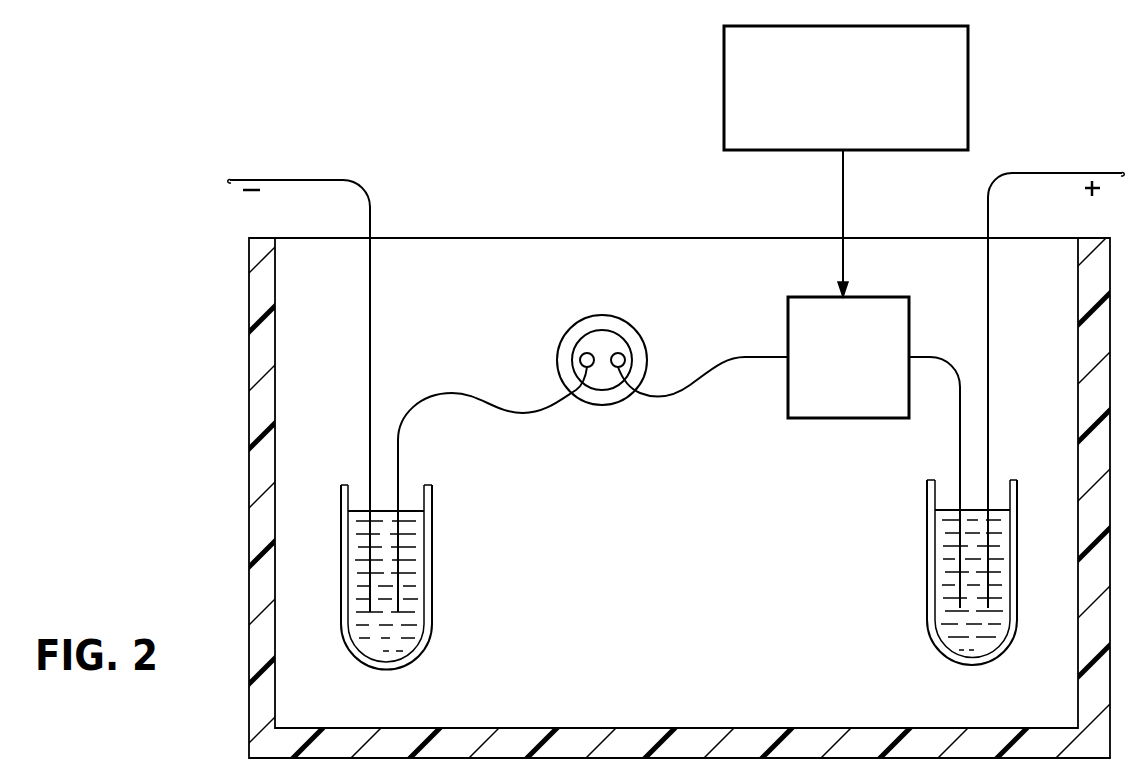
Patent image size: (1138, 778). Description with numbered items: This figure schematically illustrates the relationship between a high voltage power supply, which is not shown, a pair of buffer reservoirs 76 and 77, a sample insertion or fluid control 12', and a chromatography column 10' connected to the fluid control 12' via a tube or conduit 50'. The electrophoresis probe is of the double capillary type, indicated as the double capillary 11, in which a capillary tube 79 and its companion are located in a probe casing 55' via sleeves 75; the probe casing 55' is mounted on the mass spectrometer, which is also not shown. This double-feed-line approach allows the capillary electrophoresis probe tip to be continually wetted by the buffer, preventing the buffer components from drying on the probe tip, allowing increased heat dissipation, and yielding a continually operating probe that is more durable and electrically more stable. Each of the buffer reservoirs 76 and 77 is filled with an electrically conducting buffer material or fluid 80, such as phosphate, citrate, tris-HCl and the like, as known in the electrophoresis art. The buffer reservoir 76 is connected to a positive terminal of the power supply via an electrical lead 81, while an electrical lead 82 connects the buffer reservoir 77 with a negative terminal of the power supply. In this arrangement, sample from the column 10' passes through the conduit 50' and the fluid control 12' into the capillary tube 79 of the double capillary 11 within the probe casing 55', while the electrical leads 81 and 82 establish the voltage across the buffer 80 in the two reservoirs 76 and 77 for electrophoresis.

The column 10' is at (846, 88).
The tube or conduit 50' is at (872, 223).
The sample insertion or fluid control 12' is at (848, 357).
The double capillary 11 is at (595, 331).
The sleeves 75 is at (612, 352).
The probe casing 55' is at (621, 342).
The capillary tube 79 is at (452, 393).
The electrical lead 82 is at (364, 185).
The electrical lead 81 is at (1028, 173).
The buffer reservoir 77 is at (432, 582).
The buffer reservoir 76 is at (927, 538).
The electrically conducting buffer material or fluid 80 is at (410, 540).